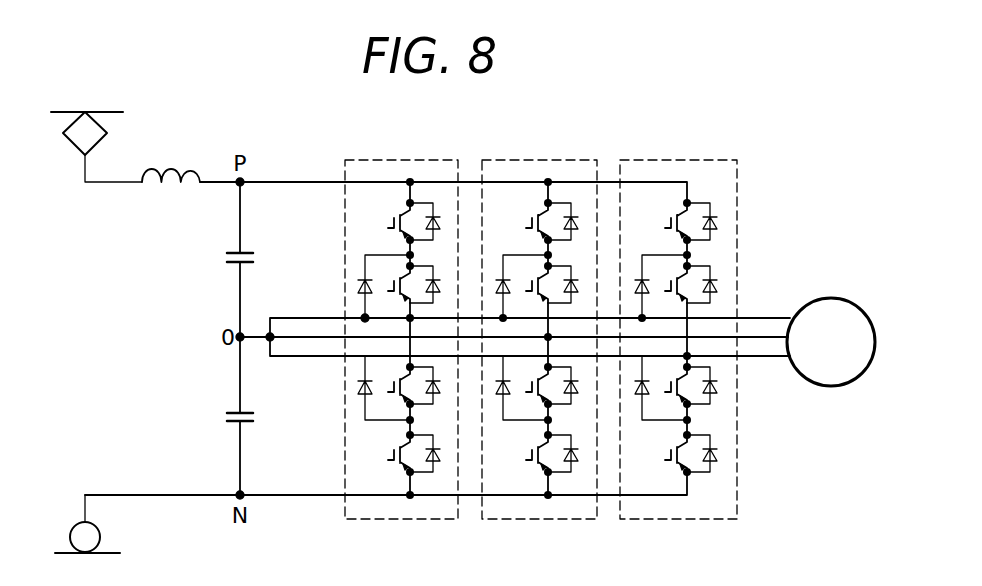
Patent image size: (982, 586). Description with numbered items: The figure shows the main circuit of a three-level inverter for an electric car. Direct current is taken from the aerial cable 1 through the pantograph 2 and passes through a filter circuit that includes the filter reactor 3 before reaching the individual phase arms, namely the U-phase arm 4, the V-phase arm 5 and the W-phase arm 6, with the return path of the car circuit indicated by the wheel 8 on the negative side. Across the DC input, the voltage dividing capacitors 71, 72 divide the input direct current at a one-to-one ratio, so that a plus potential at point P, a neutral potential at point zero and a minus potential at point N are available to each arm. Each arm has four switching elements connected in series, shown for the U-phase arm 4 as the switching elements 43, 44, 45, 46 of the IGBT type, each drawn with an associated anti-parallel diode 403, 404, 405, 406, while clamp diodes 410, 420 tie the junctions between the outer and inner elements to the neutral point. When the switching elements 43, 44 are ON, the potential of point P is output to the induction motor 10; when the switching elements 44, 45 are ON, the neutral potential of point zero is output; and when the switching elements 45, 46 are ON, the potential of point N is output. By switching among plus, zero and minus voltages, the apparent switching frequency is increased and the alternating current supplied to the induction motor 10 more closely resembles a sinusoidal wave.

The aerial cable 1 is at (103, 112).
The pantograph 2 is at (70, 148).
The filter reactor 3 is at (173, 170).
The U-phase arm 4 is at (457, 160).
The V-phase arm 5 is at (596, 160).
The W-phase arm 6 is at (737, 160).
The wheel (ground return) 8 is at (102, 536).
The induction motor 10 is at (818, 298).
The switching element 43 is at (398, 214).
The switching element 44 is at (400, 276).
The switching element 45 is at (398, 398).
The switching element 46 is at (398, 465).
The voltage dividing capacitor 71 is at (228, 263).
The voltage dividing capacitor 72 is at (228, 423).
The freewheeling diode of element 43 403 is at (443, 218).
The freewheeling diode of element 44 404 is at (443, 262).
The freewheeling diode of element 45 405 is at (443, 395).
The freewheeling diode of element 46 406 is at (442, 453).
The upper clamp diode 410 is at (355, 283).
The lower clamp diode 420 is at (355, 393).